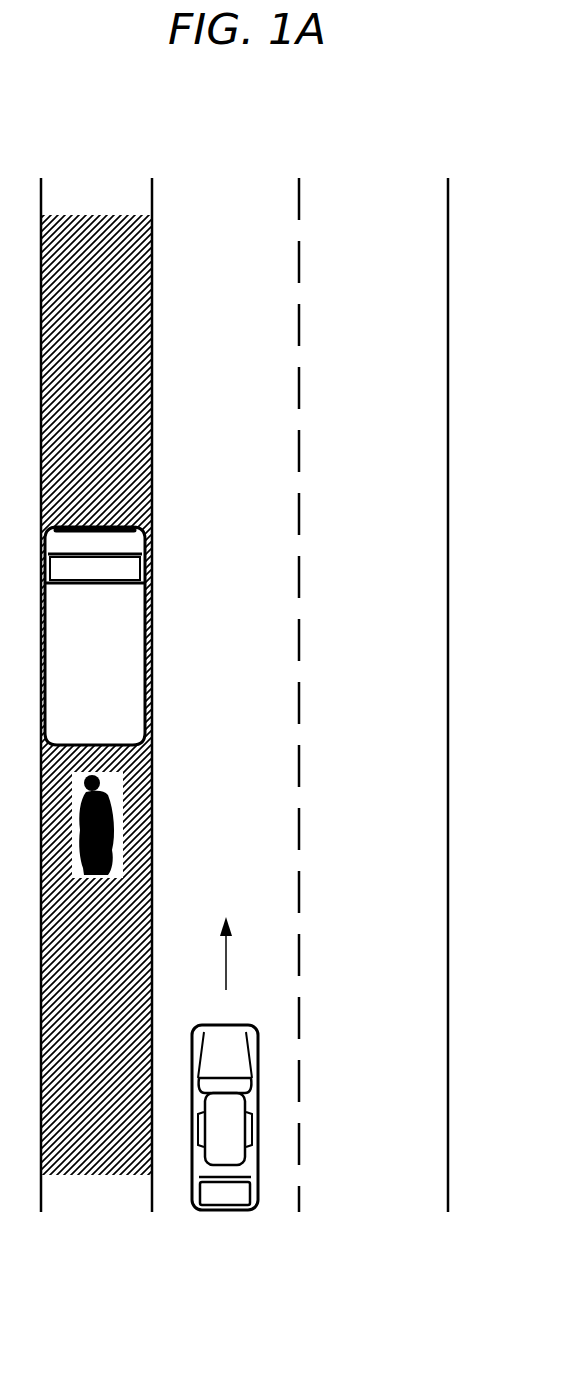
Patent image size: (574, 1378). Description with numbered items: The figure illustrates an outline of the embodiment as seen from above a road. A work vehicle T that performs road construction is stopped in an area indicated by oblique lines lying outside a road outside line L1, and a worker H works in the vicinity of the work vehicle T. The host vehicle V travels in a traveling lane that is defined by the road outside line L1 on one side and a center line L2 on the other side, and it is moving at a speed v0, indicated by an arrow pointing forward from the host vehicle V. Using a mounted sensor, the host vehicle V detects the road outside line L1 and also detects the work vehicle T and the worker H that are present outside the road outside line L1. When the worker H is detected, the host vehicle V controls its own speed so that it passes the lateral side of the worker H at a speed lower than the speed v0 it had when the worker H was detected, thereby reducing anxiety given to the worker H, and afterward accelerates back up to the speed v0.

The road outside line L1 is at (153, 192).
The center line L2 is at (300, 192).
The work vehicle T is at (122, 524).
The worker H is at (117, 783).
The host vehicle V is at (223, 1027).
The speed v0 is at (236, 950).